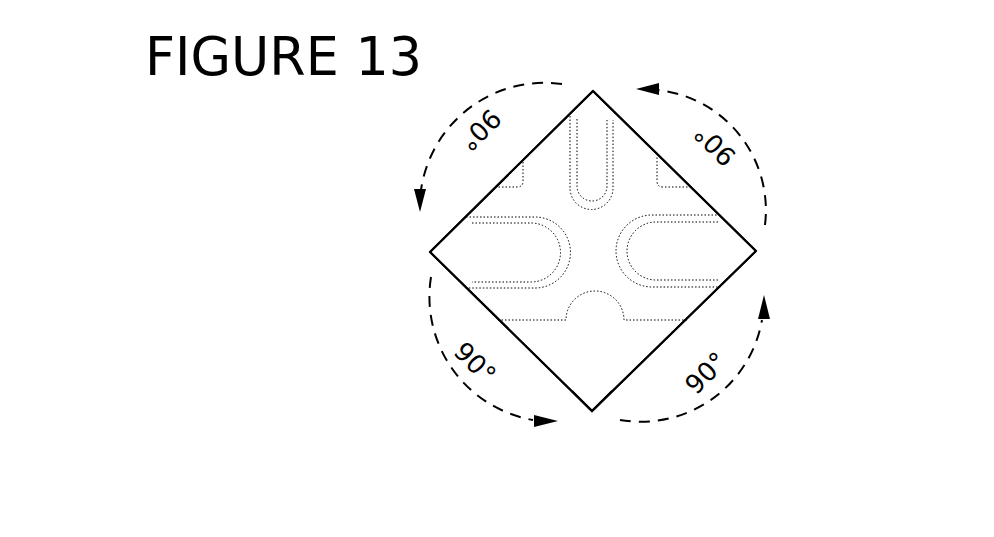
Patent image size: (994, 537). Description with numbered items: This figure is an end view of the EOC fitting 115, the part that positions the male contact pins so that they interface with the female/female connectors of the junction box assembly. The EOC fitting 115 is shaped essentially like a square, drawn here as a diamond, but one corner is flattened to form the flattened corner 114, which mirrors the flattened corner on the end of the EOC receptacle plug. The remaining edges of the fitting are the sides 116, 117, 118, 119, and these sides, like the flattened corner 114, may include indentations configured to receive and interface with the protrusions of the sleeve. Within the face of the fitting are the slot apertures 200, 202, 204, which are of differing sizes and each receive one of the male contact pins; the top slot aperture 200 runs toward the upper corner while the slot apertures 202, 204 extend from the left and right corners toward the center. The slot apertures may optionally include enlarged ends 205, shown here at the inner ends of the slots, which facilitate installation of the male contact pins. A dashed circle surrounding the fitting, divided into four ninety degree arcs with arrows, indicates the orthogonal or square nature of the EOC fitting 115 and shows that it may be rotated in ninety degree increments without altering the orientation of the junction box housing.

The flattened corner 114 is at (597, 410).
The EOC fitting 115 is at (376, 280).
The side 116 is at (655, 150).
The side 117 is at (543, 141).
The side 118 is at (527, 330).
The side 119 is at (695, 313).
The slot aperture 200 is at (589, 158).
The slot aperture 202 is at (527, 258).
The slot aperture 204 is at (667, 245).
The enlarged end 205 is at (625, 248).